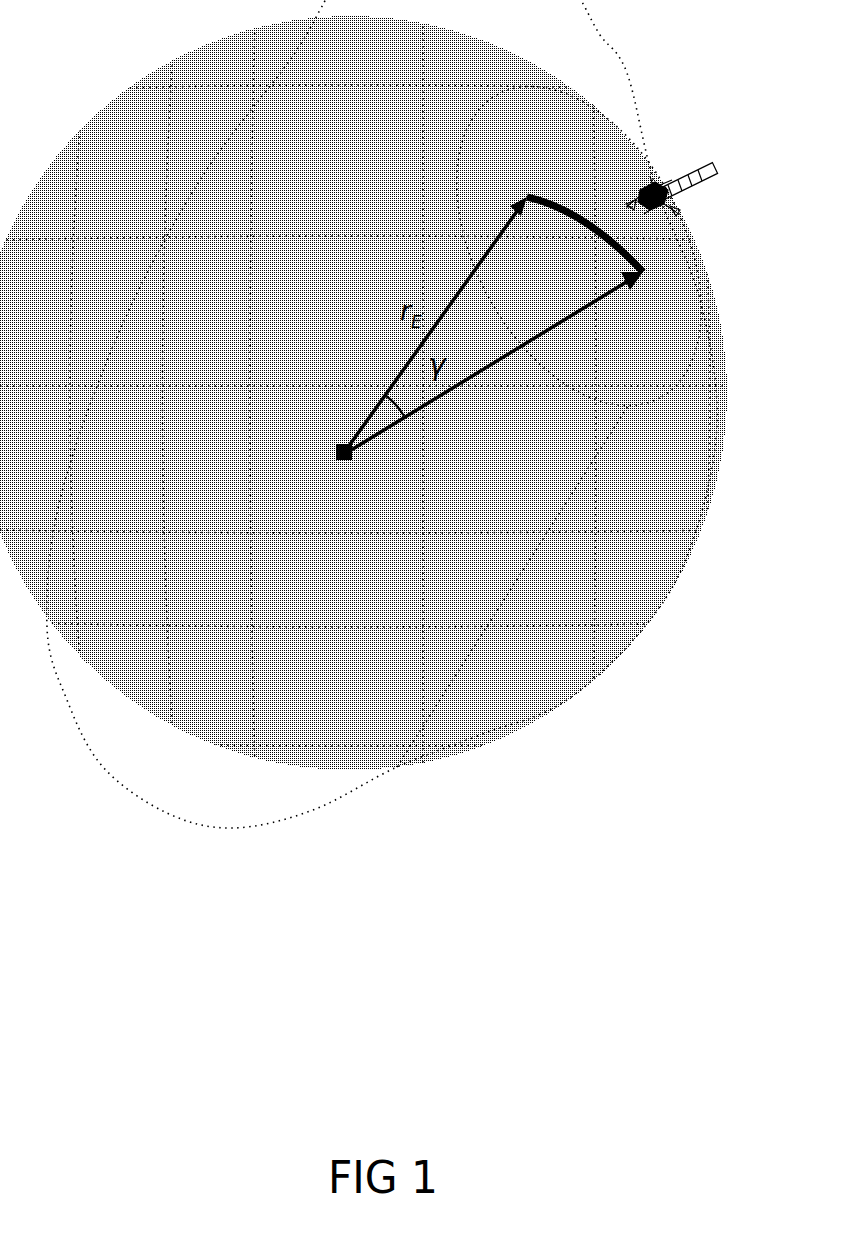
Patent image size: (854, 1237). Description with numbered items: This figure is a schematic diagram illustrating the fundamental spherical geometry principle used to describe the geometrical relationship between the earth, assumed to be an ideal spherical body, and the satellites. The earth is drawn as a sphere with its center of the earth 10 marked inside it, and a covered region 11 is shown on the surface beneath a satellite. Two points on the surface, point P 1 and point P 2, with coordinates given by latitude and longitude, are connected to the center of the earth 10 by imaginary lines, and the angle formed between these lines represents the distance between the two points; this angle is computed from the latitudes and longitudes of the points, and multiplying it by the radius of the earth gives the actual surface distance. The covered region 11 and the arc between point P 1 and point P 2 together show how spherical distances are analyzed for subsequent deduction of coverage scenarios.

The center of the earth 10 is at (340, 455).
The covered region 11 is at (663, 395).
The point P1 on Earth surface 1 is at (542, 184).
The point P2 on Earth surface 2 is at (707, 280).